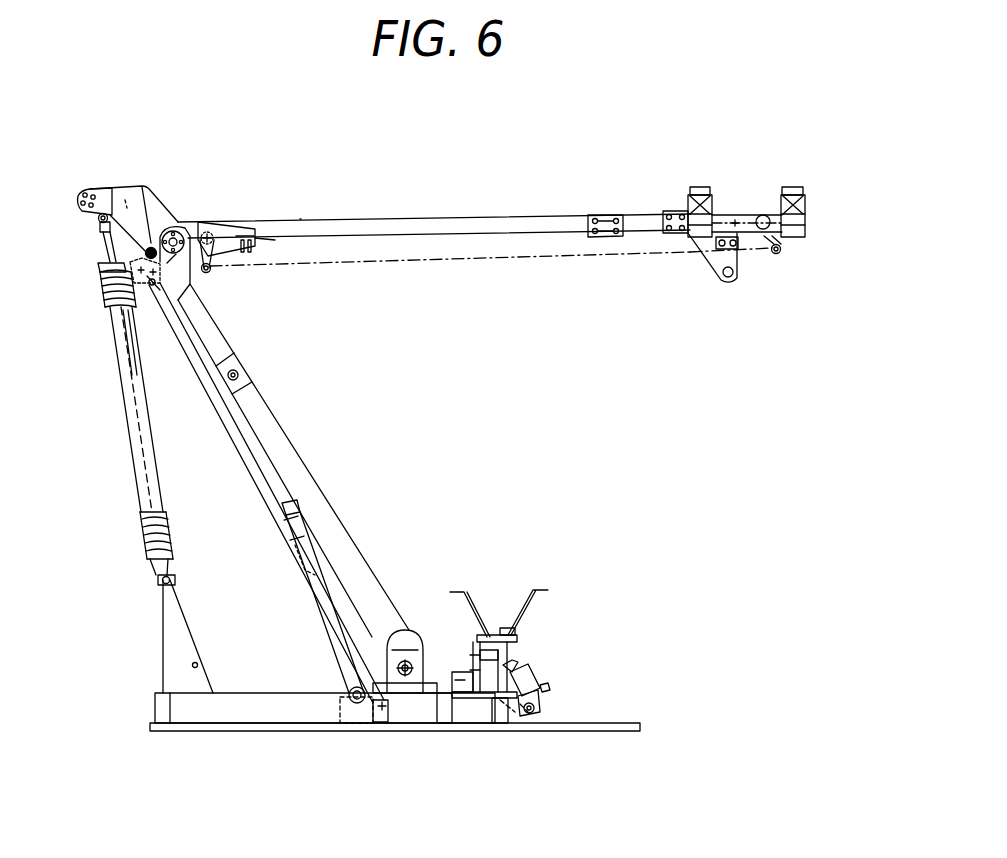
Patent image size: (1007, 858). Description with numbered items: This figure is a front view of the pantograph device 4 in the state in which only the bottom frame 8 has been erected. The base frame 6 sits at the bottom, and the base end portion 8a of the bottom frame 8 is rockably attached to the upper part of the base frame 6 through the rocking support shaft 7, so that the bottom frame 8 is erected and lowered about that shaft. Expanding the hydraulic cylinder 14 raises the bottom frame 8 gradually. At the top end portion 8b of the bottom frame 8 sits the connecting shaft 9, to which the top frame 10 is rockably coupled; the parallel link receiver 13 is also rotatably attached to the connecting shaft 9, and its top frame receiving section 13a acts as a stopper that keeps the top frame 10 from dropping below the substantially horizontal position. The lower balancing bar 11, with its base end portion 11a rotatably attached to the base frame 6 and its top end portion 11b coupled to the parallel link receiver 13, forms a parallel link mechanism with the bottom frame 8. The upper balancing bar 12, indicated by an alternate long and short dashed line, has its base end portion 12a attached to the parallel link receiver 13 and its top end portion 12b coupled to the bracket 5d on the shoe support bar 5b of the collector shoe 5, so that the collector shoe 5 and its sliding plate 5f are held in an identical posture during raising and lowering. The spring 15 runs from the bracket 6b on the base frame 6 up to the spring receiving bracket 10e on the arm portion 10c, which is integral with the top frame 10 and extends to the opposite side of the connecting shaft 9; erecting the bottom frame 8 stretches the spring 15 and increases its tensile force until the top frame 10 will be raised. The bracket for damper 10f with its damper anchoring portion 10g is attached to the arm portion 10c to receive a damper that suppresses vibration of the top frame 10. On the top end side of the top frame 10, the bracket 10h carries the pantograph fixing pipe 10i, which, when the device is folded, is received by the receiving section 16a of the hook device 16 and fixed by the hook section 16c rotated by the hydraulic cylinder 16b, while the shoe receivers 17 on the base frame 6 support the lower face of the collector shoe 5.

The pantograph device 4 is at (541, 137).
The collector shoe 5 is at (808, 205).
The shoe support bar 5b is at (764, 216).
The bracket 5d is at (768, 246).
The sliding plate 5f is at (698, 186).
The base frame 6 is at (280, 713).
The bracket 6b is at (160, 645).
The rocking support shaft 7 is at (430, 705).
The bottom frame 8 is at (298, 448).
The base end portion 8a is at (411, 641).
The top end portion 8b is at (195, 283).
The connecting shaft 9 is at (180, 232).
The top frame 10 is at (394, 219).
The arm portion 10c is at (167, 198).
The spring receiving bracket 10e is at (92, 218).
The bracket for damper 10f is at (108, 197).
The damper anchoring portion 10g is at (149, 247).
The bracket 10h is at (716, 258).
The pantograph fixing pipe 10i is at (730, 280).
The lower balancing bar 11 is at (255, 467).
The base end portion 11a is at (383, 706).
The top end portion 11b is at (152, 297).
The upper balancing bar 12 is at (470, 258).
The base end portion 12a is at (211, 270).
The top end portion 12b is at (780, 250).
The parallel link receiver 13 is at (200, 222).
The top frame receiving section 13a is at (256, 242).
The hydraulic cylinder 14 is at (336, 648).
The spring 15 is at (142, 528).
The hook device 16 is at (526, 672).
The receiving section 16a is at (460, 659).
The hydraulic cylinder 16b is at (540, 690).
The hook section 16c is at (491, 635).
The shoe receiver 17 is at (534, 592).